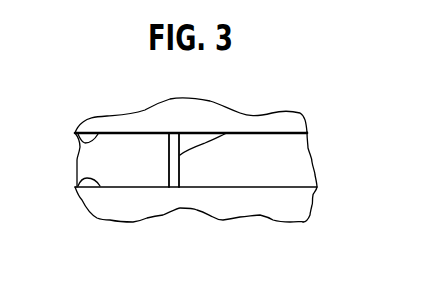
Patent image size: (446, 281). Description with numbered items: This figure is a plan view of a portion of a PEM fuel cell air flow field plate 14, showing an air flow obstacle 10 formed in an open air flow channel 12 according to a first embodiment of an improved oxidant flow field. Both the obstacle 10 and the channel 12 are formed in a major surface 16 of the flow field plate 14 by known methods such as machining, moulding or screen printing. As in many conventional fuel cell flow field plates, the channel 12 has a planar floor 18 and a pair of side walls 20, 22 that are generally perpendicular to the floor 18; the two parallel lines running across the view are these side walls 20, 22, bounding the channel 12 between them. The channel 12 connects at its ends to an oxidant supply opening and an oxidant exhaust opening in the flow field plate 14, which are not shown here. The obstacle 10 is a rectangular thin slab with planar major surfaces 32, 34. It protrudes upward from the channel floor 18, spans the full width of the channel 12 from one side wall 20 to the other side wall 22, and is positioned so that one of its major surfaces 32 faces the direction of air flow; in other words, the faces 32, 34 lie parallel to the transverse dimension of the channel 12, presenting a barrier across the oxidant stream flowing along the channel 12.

The air flow obstacle 10 is at (169, 170).
The open air flow channel 12 is at (298, 157).
The PEM fuel cell air flow field plate 14 is at (308, 110).
The major surface 16 is at (208, 110).
The planar floor 18 is at (90, 163).
The side wall 20 is at (73, 136).
The side wall 22 is at (77, 178).
The planar major surface 32 is at (168, 143).
The planar major surface 34 is at (224, 131).